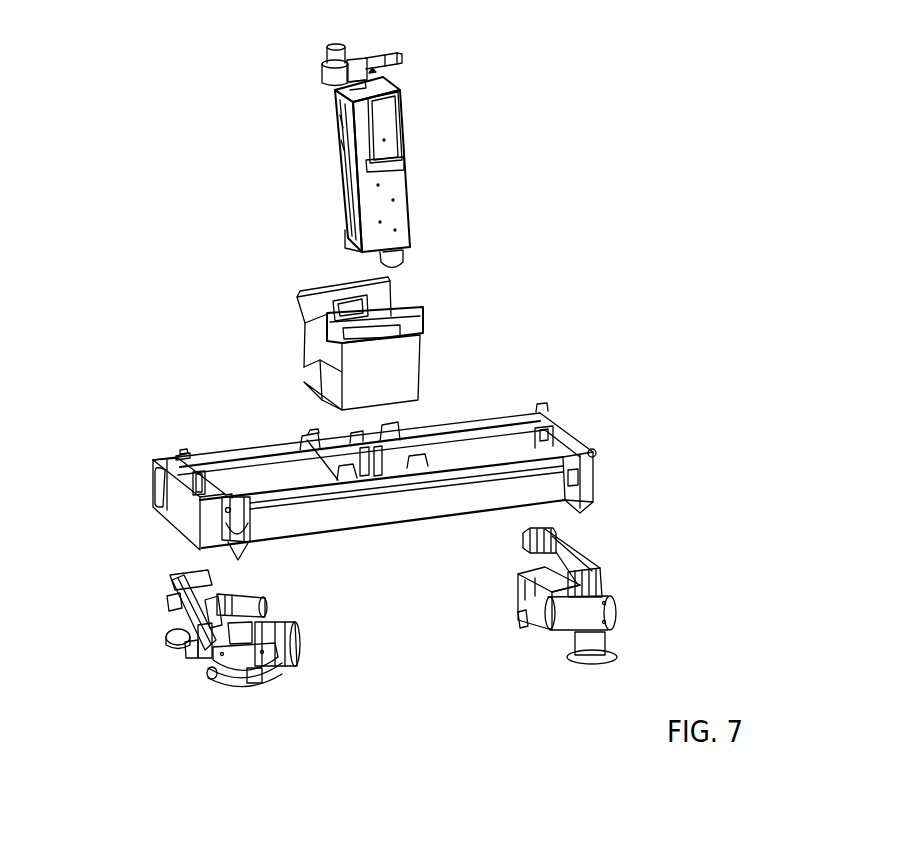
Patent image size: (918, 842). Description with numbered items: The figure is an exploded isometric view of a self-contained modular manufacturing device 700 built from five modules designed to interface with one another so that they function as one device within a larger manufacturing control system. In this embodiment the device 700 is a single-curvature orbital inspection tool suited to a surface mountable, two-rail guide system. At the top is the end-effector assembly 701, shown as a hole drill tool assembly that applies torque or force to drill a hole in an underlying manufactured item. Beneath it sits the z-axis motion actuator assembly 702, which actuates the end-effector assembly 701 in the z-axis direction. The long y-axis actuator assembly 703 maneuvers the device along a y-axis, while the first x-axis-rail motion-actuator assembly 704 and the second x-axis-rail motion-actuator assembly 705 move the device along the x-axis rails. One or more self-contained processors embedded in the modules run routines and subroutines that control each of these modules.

The self-contained modular manufacturing device 700 is at (391, 370).
The end-effector assembly 701 is at (414, 177).
The z-axis motion actuator assembly 702 is at (427, 322).
The y-axis actuator assembly 703 is at (599, 460).
The first x-axis-rail motion-actuator assembly 704 is at (617, 600).
The x-axis-rail motion-actuator assembly 705 is at (165, 608).